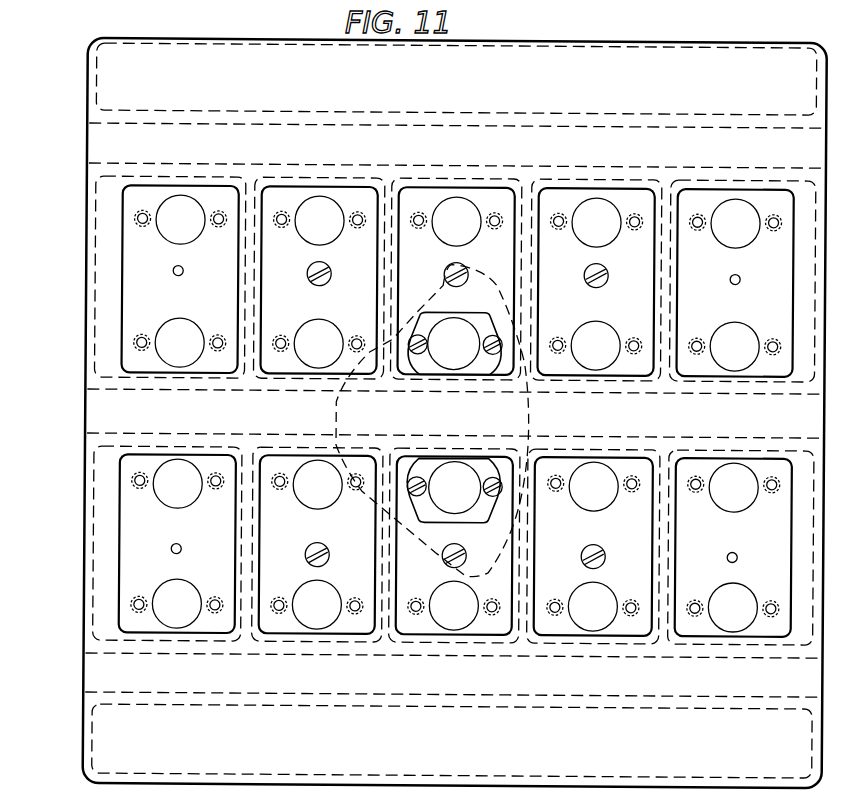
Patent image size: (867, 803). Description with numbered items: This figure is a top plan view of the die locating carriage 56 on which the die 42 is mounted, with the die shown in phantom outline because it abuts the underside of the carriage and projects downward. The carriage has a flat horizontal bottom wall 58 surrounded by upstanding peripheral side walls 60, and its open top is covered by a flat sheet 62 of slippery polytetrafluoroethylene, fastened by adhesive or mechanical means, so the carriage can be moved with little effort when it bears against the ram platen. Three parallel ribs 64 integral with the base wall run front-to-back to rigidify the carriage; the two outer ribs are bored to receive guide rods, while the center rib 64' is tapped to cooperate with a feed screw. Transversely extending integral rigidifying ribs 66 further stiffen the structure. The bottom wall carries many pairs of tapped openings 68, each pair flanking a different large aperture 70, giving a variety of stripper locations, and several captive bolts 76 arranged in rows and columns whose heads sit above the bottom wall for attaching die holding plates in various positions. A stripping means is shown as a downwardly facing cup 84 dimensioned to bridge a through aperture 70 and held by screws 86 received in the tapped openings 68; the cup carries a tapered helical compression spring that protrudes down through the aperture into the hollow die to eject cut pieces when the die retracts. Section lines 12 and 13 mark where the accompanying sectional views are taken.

The section line 12- 12 is at (65, 336).
The section line 13- 13 is at (790, 8).
The die 42 is at (362, 490).
The die locating carriage 56 is at (78, 544).
The bottom wall 58 is at (786, 302).
The peripheral side walls 60 is at (175, 770).
The sheet of slippery material 62 is at (290, 88).
The parallel ribs 64 is at (201, 439).
The center rib 64' is at (596, 305).
The transversely extending rigidifying ribs 66 is at (672, 290).
The tapped openings 68 is at (555, 489).
The large aperture 70 is at (182, 242).
The bolts 76 is at (331, 276).
The downwardly facing cup 84 is at (453, 357).
The screws 86 is at (500, 334).